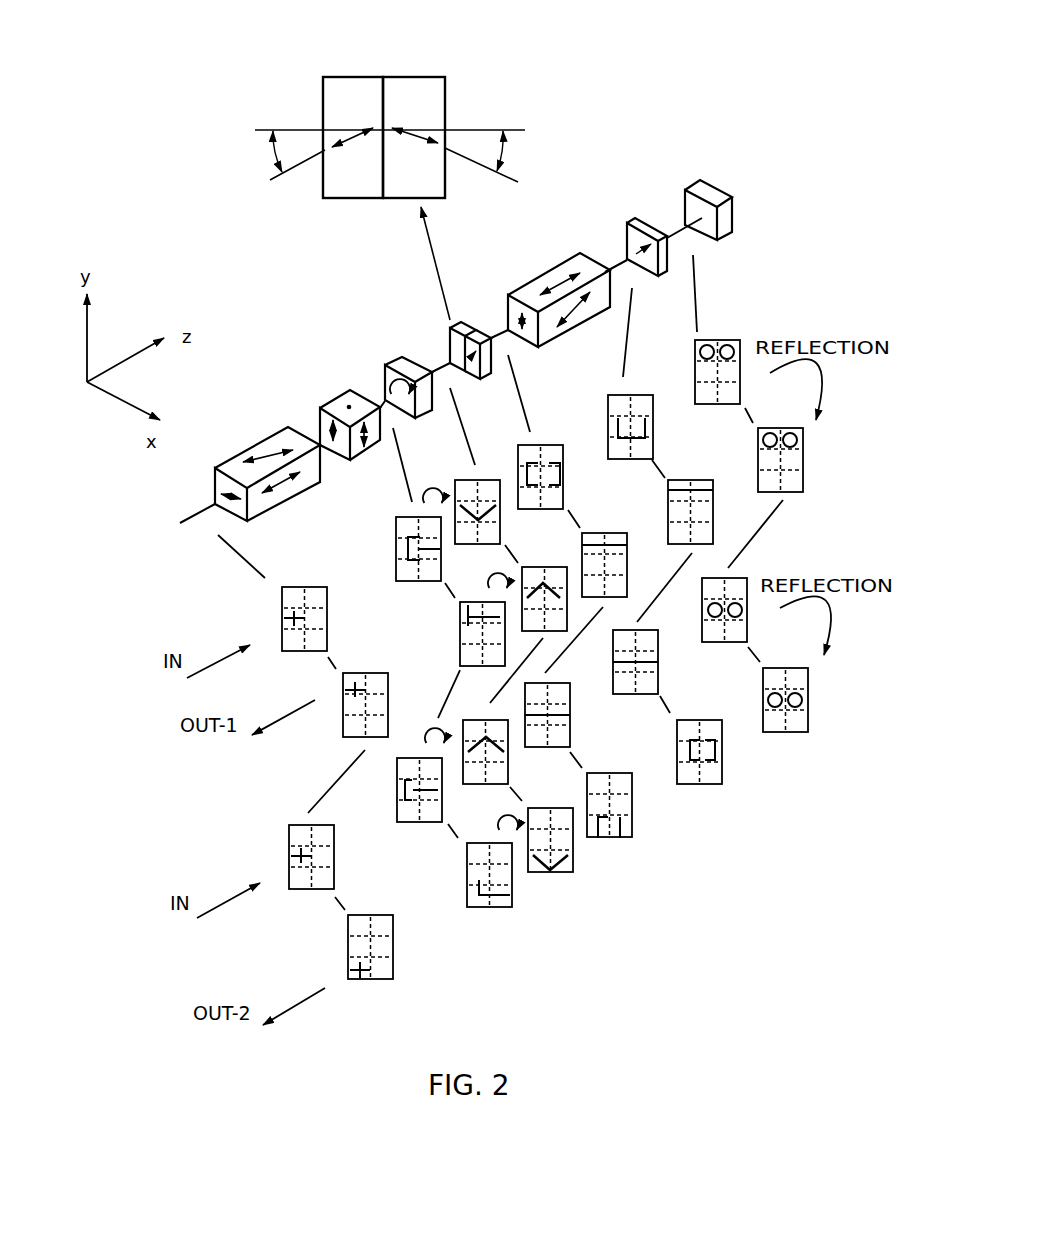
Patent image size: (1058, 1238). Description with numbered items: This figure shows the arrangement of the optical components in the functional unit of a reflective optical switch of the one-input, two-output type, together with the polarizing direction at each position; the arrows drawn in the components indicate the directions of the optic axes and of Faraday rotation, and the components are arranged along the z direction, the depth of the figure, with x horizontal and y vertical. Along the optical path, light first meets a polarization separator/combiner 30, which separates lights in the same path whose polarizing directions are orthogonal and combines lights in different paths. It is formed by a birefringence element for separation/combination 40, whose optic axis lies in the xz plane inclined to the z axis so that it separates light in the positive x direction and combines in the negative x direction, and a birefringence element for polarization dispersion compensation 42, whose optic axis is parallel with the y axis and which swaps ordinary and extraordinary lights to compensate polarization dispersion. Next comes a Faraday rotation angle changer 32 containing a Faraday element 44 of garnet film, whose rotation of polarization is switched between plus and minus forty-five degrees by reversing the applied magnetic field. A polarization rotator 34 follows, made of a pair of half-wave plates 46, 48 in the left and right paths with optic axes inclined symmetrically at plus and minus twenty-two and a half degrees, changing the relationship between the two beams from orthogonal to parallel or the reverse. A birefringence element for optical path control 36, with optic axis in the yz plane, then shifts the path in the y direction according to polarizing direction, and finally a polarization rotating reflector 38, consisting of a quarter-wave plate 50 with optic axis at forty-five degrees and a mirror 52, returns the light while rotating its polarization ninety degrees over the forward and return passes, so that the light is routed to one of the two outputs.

The polarization separator/combiner 30 is at (343, 359).
The Faraday rotation angle changer 32 is at (388, 358).
The polarization rotator 34 is at (313, 88).
The birefringence element for optical path control 36 is at (545, 279).
The polarization rotating reflector 38 is at (700, 148).
The birefringence element for separation/combination 40 is at (288, 493).
The birefringence element for polarization dispersion compensation 42 is at (360, 455).
The Faraday element 44 is at (425, 407).
The 1/2 wave plate 46 is at (352, 90).
The 1/2 wave plate 48 is at (424, 90).
The 1/4 wave plate 50 is at (648, 272).
The mirror 52 is at (707, 235).